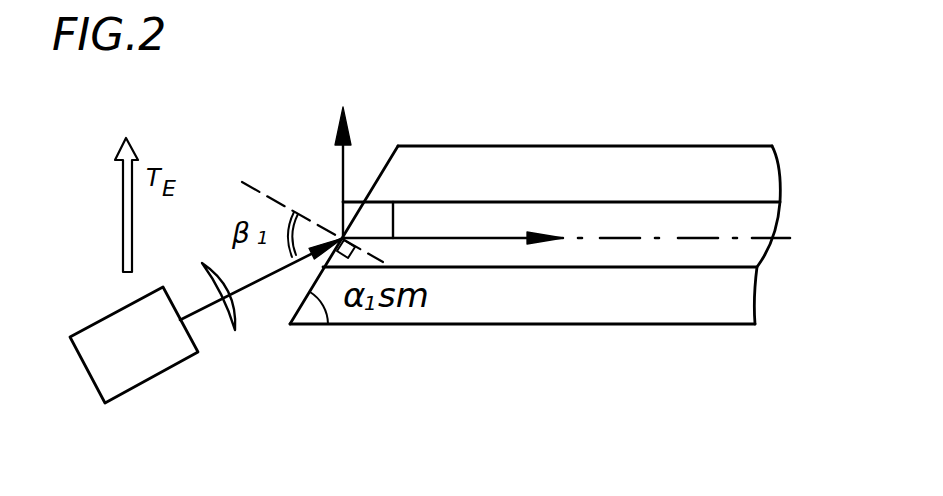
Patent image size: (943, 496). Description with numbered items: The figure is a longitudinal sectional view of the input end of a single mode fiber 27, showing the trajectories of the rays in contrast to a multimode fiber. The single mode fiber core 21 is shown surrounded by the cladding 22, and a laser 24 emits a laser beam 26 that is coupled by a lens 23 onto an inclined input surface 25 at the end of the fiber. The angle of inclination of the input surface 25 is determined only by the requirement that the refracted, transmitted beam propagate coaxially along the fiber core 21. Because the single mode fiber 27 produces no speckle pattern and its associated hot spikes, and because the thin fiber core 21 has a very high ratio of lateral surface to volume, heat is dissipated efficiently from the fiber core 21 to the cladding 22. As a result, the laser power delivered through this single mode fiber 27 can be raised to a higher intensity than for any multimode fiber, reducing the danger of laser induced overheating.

The single mode fiber core 21 is at (652, 255).
The cladding 22 is at (717, 298).
The lens 23 is at (222, 318).
The laser 24 is at (143, 385).
The input surface 25 is at (384, 170).
The laser beam 26 is at (262, 280).
The single mode fiber 27 is at (532, 145).